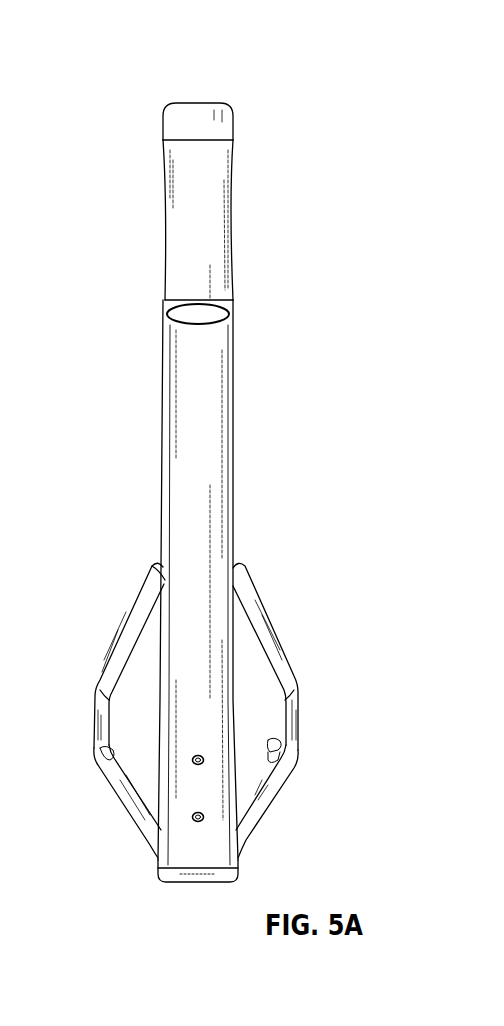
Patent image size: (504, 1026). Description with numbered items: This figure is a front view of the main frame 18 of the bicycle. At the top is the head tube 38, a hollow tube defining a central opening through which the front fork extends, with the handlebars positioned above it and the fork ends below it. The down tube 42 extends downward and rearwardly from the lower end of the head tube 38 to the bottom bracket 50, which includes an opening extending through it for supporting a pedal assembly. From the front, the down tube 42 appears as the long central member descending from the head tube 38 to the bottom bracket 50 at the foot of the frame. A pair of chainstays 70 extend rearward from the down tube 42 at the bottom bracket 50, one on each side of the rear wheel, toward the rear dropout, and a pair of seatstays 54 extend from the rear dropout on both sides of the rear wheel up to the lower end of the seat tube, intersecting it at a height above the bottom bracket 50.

The main frame 18 is at (292, 110).
The head tube 38 is at (205, 212).
The down tube 42 is at (226, 453).
The bottom bracket 50 is at (192, 881).
The seatstays 54 is at (138, 623).
The chainstays 70 is at (120, 813).